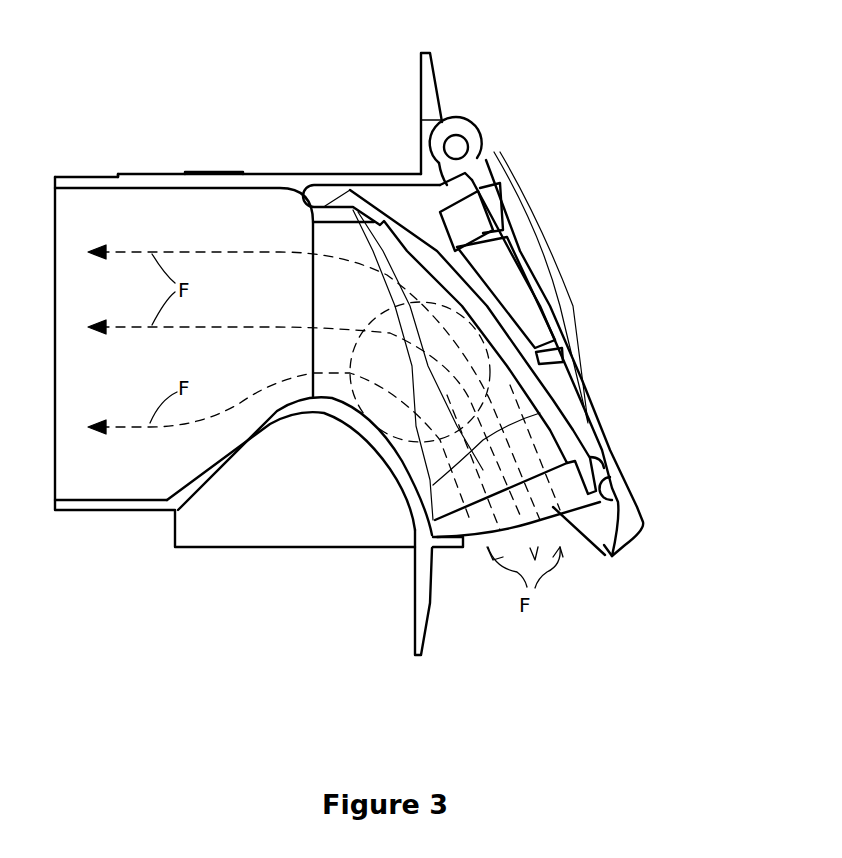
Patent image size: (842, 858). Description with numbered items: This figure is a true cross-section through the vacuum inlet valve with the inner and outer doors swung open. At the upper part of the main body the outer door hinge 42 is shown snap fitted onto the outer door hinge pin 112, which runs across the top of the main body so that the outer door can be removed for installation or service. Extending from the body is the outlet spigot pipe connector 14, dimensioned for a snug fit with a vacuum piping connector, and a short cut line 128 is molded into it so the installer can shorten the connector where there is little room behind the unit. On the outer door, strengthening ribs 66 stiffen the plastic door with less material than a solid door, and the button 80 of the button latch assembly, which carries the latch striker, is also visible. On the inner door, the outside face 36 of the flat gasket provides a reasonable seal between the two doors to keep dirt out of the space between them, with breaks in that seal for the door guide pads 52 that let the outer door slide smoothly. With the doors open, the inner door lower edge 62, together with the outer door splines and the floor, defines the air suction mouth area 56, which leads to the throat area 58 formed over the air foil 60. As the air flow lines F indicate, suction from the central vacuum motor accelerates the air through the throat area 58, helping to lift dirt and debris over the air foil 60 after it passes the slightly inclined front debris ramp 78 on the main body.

The outlet spigot pipe connector 14 is at (77, 175).
The short cut line 128 is at (118, 174).
The outside face of the flat gasket 36 is at (358, 210).
The outer door hinge 42 is at (468, 120).
The outer door hinge pin 112 is at (462, 148).
The door guide pad 52 is at (594, 456).
The air suction mouth area 56 is at (580, 533).
The throat area 58 is at (410, 447).
The air foil 60 is at (307, 413).
The inner door lower edge 62 is at (632, 505).
The strengthening ribs 66 is at (493, 222).
The front debris ramp 78 is at (435, 70).
The button 80 is at (557, 260).